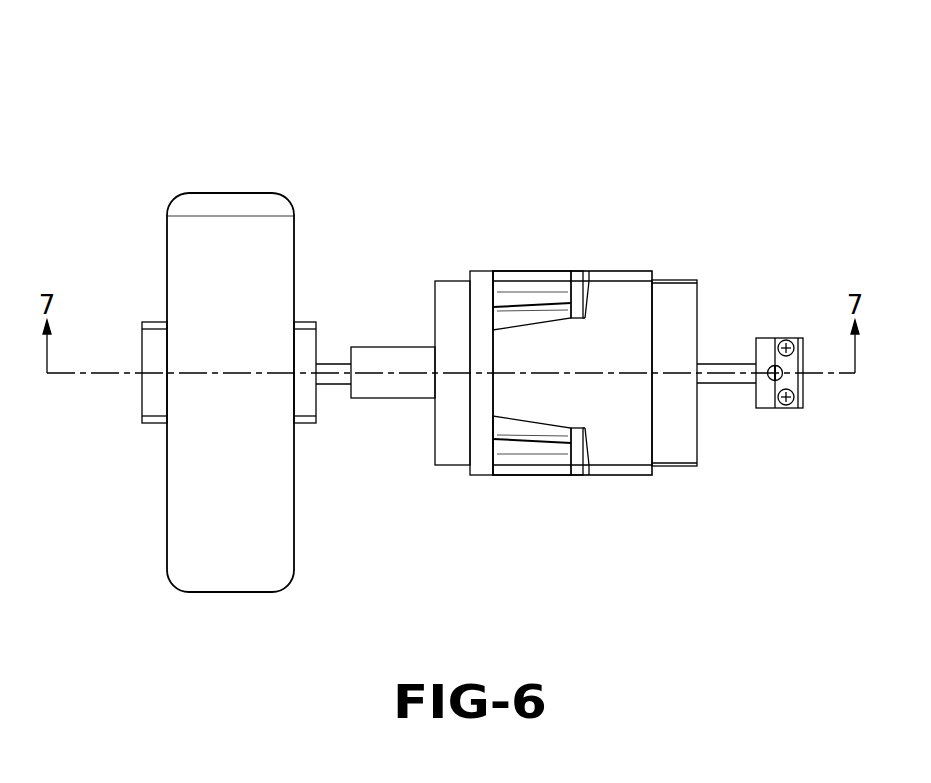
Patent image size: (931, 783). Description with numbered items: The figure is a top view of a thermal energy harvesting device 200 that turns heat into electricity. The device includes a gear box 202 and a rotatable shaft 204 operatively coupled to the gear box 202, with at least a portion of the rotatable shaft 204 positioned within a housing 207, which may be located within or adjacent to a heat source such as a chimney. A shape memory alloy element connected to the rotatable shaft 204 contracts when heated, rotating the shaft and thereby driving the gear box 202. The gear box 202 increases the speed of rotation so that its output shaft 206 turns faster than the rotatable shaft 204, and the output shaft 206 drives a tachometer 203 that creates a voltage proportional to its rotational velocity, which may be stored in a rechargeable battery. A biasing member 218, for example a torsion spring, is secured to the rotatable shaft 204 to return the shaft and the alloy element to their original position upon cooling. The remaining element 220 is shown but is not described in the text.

The thermal energy harvesting device 200 is at (541, 124).
The gear box 202 is at (610, 270).
The tachometer 203 is at (800, 385).
The rotatable shaft 204 is at (331, 365).
The output shaft 206 is at (722, 362).
The housing 207 is at (150, 423).
The biasing member 218 is at (141, 373).
The flywheel 220 is at (290, 197).